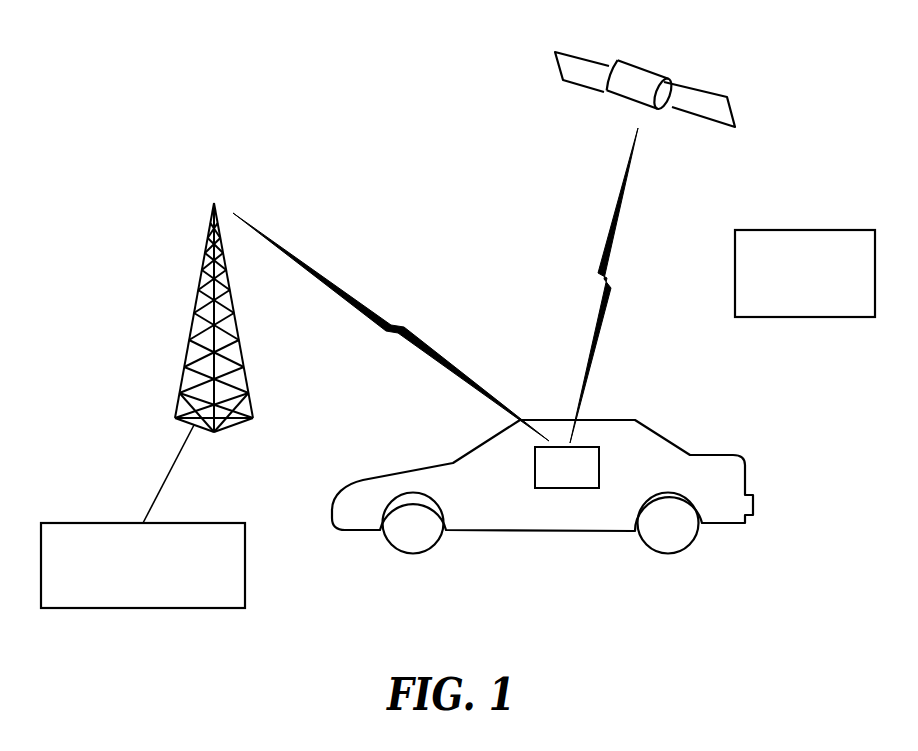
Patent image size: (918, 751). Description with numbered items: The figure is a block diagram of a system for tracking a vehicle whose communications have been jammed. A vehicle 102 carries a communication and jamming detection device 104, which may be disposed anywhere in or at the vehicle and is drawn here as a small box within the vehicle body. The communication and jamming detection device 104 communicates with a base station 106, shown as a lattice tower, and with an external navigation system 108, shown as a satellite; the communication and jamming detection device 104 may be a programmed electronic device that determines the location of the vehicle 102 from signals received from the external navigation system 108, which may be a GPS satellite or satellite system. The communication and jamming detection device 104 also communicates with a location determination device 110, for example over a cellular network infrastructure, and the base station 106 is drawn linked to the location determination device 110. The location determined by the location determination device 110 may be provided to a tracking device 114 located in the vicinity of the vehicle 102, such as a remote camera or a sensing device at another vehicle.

The vehicle 102 is at (623, 418).
The communication and jamming detection device 104 is at (549, 477).
The base station 106 is at (205, 262).
The external navigation system 108 is at (643, 63).
The location determination device 110 is at (85, 523).
The tracking device 114 is at (793, 230).